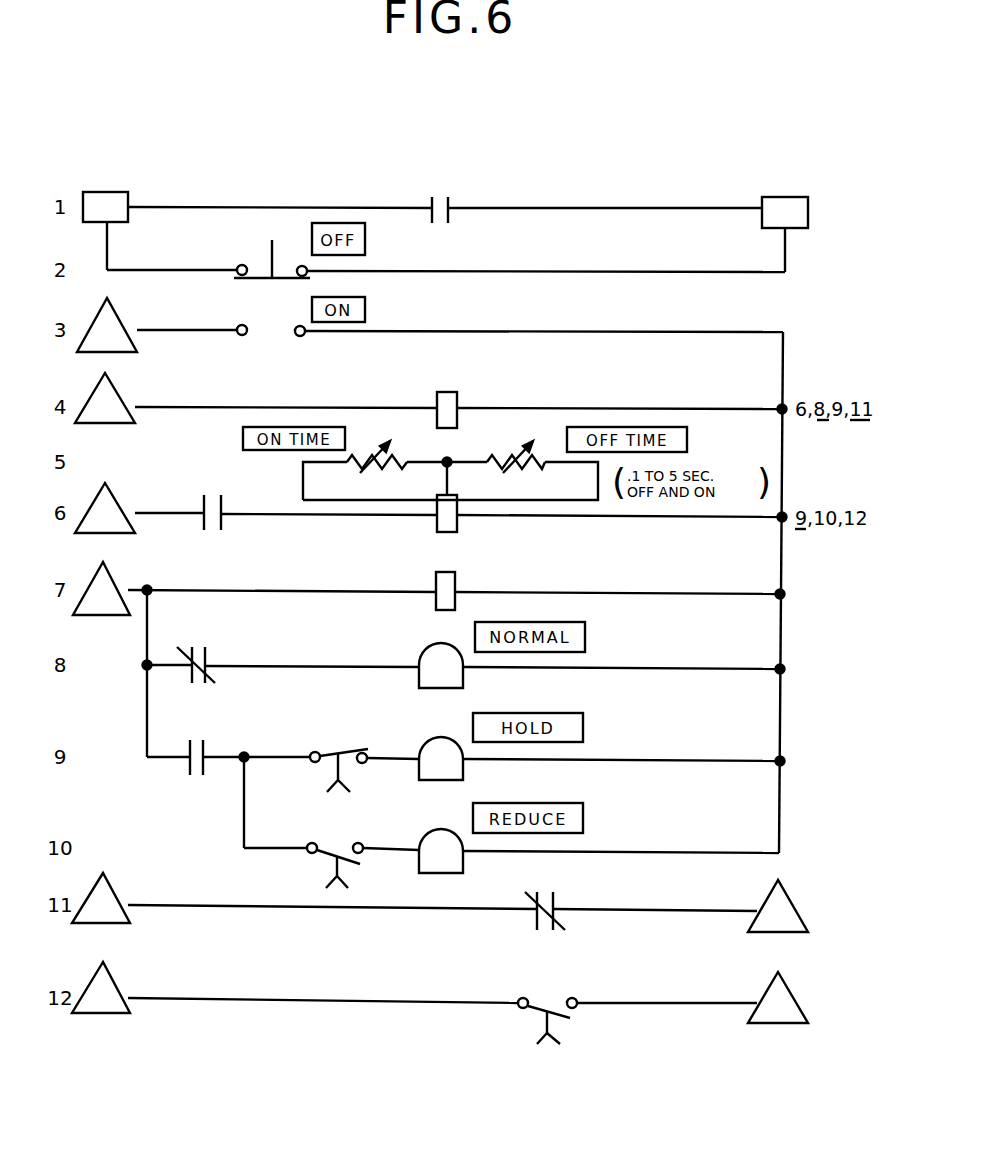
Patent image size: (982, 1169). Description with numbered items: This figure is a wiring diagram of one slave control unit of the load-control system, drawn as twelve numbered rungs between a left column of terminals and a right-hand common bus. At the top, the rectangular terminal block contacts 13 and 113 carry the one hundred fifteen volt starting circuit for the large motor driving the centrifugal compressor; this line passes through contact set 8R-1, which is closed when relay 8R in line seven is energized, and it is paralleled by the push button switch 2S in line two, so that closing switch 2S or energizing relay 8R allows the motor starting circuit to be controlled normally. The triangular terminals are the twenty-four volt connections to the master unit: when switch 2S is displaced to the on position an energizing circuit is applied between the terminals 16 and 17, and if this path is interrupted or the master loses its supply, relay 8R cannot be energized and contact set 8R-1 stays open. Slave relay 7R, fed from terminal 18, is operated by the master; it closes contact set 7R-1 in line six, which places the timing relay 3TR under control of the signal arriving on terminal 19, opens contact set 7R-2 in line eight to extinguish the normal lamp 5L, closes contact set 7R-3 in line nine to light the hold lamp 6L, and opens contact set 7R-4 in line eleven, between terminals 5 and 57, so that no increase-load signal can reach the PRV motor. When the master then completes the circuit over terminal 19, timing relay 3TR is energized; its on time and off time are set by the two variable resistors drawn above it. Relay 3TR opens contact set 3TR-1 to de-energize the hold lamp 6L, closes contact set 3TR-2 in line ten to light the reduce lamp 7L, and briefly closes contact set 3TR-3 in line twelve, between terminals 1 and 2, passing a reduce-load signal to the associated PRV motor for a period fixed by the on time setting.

The terminal block contact 13 is at (105, 207).
The terminal block contact 113 is at (785, 212).
The contact set 8R-1 is at (442, 197).
The switch 2S is at (267, 258).
The terminal 16 is at (107, 325).
The terminal 18 is at (105, 398).
The slave relay 7R is at (446, 397).
The timing relay 3TR is at (450, 486).
The terminal 19 is at (105, 508).
The contact set 7R-1 is at (211, 501).
The terminal 17 is at (101, 588).
The relay 8R is at (444, 578).
The contact set 7R-2 is at (202, 652).
The normal lamp 5L is at (441, 655).
The contact set 7R-3 is at (206, 744).
The contact set 3TR-1 is at (339, 753).
The hold lamp 6L is at (441, 747).
The contact set 3TR-2 is at (336, 847).
The reduce lamp 7L is at (441, 839).
The terminal 5 is at (101, 898).
The contact set 7R-4 is at (550, 898).
The terminal 57 is at (778, 906).
The terminal 1 is at (101, 987).
The contact set 3TR-3 is at (547, 1003).
The terminal 2 is at (778, 997).